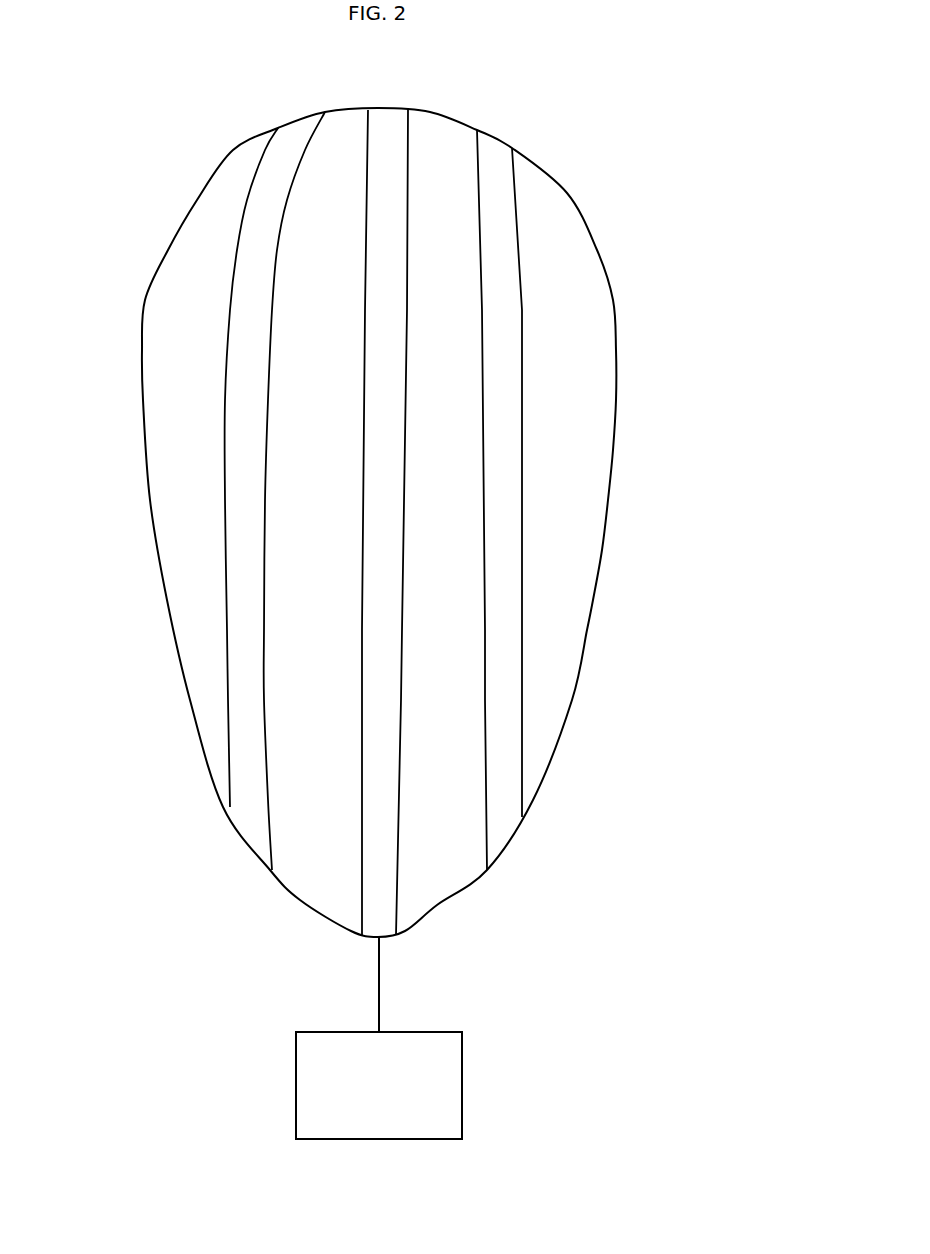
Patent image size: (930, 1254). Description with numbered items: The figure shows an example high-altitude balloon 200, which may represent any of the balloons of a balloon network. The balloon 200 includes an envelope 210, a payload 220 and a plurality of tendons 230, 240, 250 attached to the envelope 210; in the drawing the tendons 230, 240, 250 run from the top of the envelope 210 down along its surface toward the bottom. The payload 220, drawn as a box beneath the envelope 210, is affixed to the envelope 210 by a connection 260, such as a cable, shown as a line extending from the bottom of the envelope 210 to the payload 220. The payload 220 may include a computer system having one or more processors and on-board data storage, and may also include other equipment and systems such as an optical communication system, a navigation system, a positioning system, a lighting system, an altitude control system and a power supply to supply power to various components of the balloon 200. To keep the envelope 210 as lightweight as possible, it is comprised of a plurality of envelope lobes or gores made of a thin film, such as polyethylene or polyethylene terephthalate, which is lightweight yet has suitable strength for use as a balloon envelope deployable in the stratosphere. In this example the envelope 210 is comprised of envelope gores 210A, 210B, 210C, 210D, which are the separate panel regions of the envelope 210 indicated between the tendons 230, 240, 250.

The high-altitude balloon 200 is at (78, 190).
The envelope 210 is at (607, 272).
The envelope gore 210A is at (188, 558).
The envelope gore 210B is at (296, 712).
The envelope gore 210C is at (427, 796).
The envelope gore 210D is at (569, 536).
The payload 220 is at (295, 1080).
The tendon 230 is at (292, 125).
The tendon 240 is at (387, 107).
The tendon 250 is at (495, 138).
The connection 260 is at (380, 997).